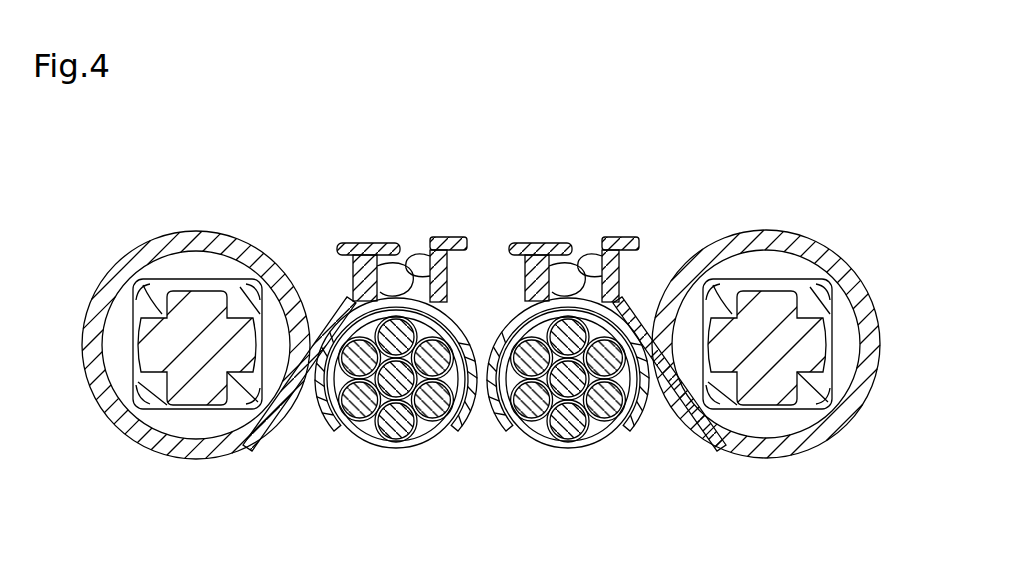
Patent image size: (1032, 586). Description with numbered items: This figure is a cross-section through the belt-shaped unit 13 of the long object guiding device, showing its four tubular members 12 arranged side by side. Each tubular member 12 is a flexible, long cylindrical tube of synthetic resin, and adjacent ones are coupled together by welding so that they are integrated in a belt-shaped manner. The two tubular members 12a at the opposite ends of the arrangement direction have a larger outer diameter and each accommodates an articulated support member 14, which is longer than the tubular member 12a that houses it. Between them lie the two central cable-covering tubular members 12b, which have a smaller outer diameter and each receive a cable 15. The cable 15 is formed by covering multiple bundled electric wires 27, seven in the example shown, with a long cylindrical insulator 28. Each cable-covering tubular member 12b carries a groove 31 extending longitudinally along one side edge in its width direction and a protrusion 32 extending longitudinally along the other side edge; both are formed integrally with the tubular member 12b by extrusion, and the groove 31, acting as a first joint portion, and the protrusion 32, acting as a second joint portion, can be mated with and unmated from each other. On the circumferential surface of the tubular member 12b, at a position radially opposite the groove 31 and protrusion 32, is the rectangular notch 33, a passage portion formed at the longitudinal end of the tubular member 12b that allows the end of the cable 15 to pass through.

The tubular member 12 is at (498, 379).
The tubular member 12a is at (142, 445).
The cable-covering tubular member 12b is at (313, 407).
The belt-shaped unit 13 is at (697, 218).
The articulated support member 14 is at (172, 278).
The cable 15 is at (490, 432).
The electric wire 27 is at (480, 512).
The insulator 28 is at (460, 433).
The groove 31 is at (410, 245).
The protrusion 32 is at (353, 243).
The notch 33 is at (336, 441).